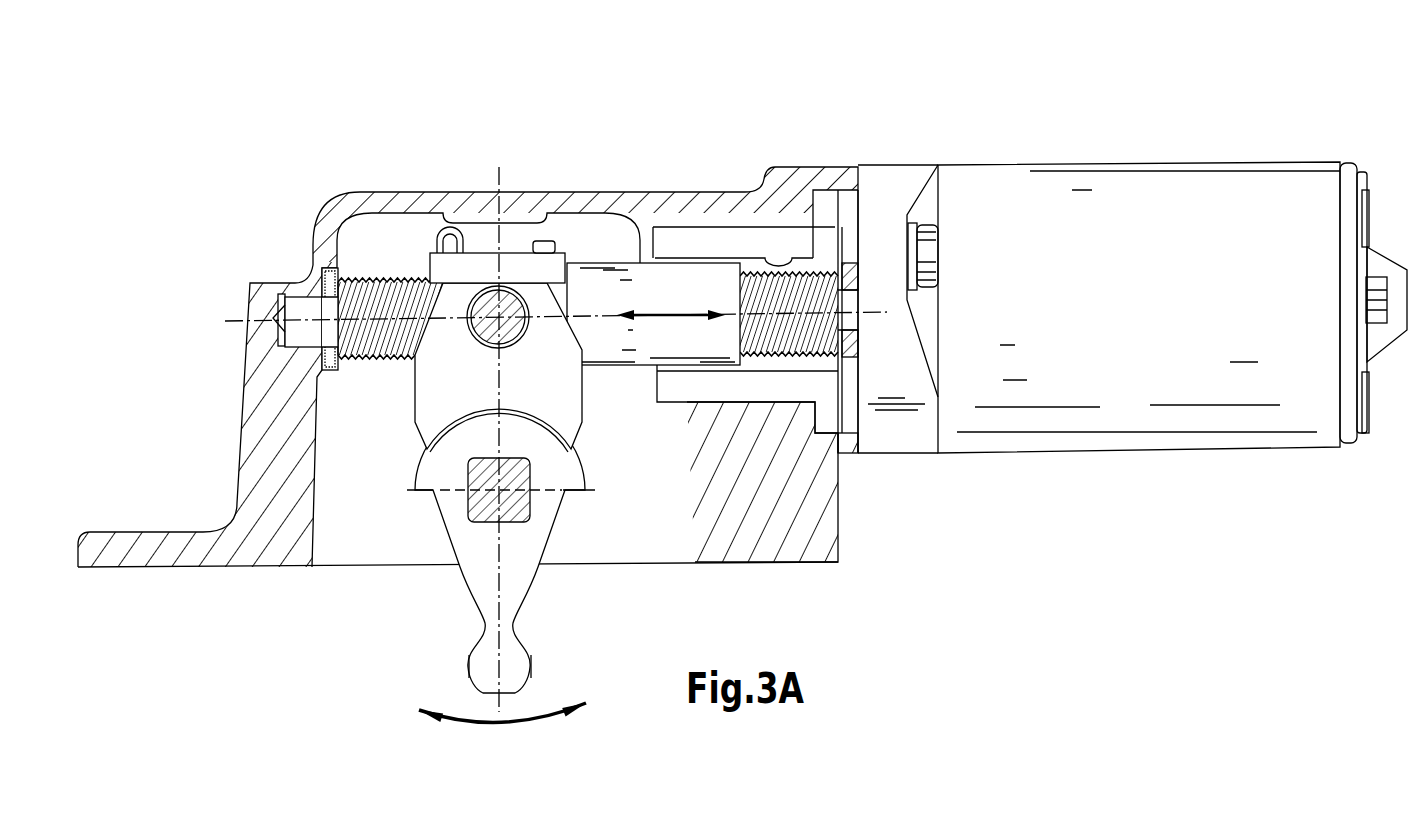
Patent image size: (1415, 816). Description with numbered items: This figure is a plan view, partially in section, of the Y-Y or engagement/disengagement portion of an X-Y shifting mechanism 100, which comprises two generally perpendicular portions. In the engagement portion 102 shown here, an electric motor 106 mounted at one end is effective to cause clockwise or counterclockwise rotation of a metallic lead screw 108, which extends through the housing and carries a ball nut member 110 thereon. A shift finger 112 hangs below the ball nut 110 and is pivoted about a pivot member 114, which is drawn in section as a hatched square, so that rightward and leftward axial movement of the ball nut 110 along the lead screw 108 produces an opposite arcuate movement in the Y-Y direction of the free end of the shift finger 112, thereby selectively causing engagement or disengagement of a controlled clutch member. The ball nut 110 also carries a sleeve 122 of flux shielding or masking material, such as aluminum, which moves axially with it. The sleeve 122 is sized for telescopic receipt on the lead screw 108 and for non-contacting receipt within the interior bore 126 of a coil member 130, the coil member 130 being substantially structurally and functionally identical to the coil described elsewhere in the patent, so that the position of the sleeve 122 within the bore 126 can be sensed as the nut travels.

The X-Y shifting mechanism 100 is at (1112, 90).
The engagement portion 102 is at (1132, 265).
The electric motor 106 is at (1148, 295).
The lead screw 108 is at (377, 324).
The ball nut member 110 is at (573, 265).
The shift finger 112 is at (520, 650).
The pivot member 114 is at (508, 498).
The sleeve 122 is at (678, 282).
The interior bore 126 is at (790, 253).
The coil member 130 is at (767, 385).